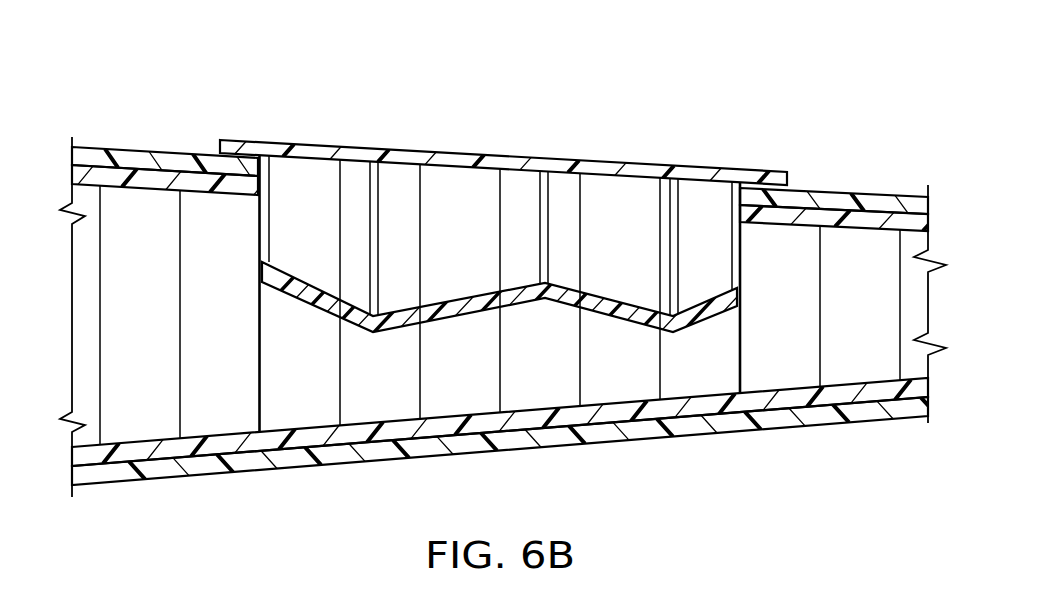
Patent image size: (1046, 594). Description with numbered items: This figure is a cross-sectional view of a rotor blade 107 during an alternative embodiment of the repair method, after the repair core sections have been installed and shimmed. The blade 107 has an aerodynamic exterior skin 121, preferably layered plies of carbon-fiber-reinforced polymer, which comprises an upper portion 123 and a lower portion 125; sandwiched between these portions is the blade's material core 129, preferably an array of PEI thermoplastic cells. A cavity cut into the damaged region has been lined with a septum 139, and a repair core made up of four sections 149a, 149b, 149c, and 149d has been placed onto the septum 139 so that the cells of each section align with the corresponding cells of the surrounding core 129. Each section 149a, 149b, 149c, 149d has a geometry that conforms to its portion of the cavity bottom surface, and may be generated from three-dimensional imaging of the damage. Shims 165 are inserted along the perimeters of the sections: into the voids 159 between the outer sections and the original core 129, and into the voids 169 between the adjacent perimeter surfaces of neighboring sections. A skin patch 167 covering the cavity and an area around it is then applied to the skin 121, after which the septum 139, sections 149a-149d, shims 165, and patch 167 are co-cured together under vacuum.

The blade 107 is at (829, 101).
The aerodynamic exterior skin 121 is at (128, 151).
The upper portion 123 is at (174, 153).
The skin patch 167 is at (350, 153).
The section of repair core 149a is at (282, 182).
The section of repair core 149b is at (448, 190).
The section of repair core 149c is at (615, 192).
The section of repair core 149d is at (700, 198).
The void 159 is at (259, 242).
The shim 165 is at (372, 203).
The void 169 is at (368, 243).
The septum 139 is at (435, 310).
The material core 129 is at (230, 413).
The lower portion 125 is at (427, 457).